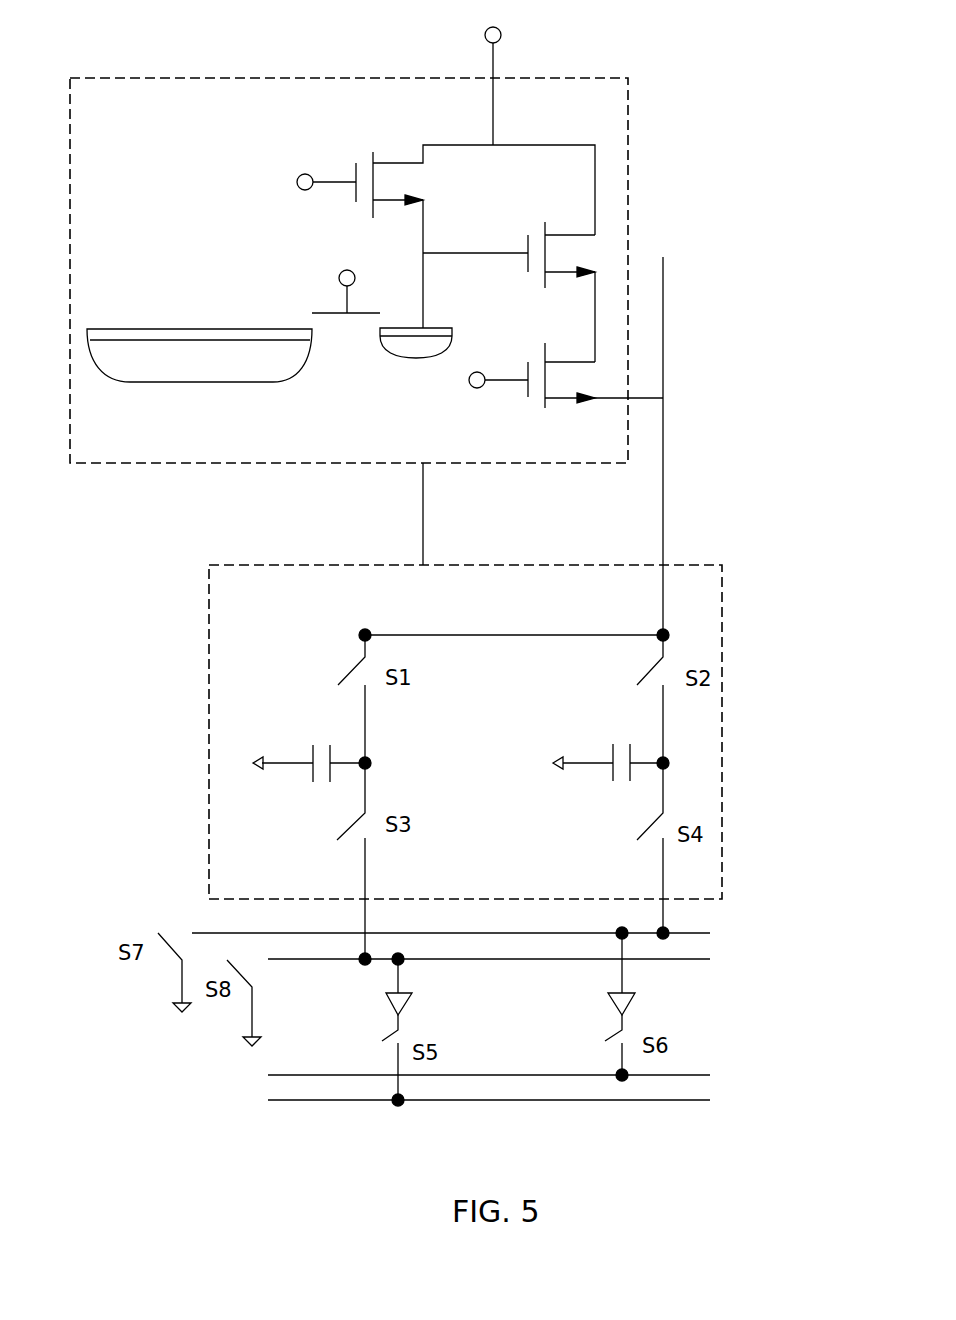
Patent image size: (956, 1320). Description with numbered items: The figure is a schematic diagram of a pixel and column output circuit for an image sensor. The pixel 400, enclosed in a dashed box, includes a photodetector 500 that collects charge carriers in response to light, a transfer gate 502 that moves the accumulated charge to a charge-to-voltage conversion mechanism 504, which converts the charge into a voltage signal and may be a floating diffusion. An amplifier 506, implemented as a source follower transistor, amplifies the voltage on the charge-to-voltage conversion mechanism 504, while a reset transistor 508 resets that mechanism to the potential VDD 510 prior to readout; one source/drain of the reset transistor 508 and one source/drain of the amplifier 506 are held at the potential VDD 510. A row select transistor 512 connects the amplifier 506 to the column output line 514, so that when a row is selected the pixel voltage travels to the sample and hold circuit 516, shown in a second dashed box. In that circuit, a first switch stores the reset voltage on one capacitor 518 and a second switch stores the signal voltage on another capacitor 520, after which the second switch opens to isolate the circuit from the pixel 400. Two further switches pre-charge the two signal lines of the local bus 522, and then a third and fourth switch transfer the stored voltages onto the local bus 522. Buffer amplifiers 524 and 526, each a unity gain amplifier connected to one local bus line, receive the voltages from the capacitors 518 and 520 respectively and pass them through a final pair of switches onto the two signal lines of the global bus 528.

The pixel 400 is at (70, 160).
The photodetector 500 is at (215, 365).
The transfer gate 502 is at (338, 316).
The charge-to-voltage conversion mechanism 504 is at (415, 345).
The amplifier 506 is at (545, 225).
The reset transistor 508 is at (373, 153).
The potential VDD 510 is at (488, 28).
The row select transistor 512 is at (545, 408).
The column output line 514 is at (663, 492).
The sample and hold circuit 516 is at (228, 562).
The capacitor 518 is at (304, 783).
The capacitor 520 is at (606, 784).
The local bus 522 is at (714, 947).
The buffer amplifier 524 is at (392, 1000).
The buffer amplifier 526 is at (612, 1000).
The global bus 528 is at (716, 1085).